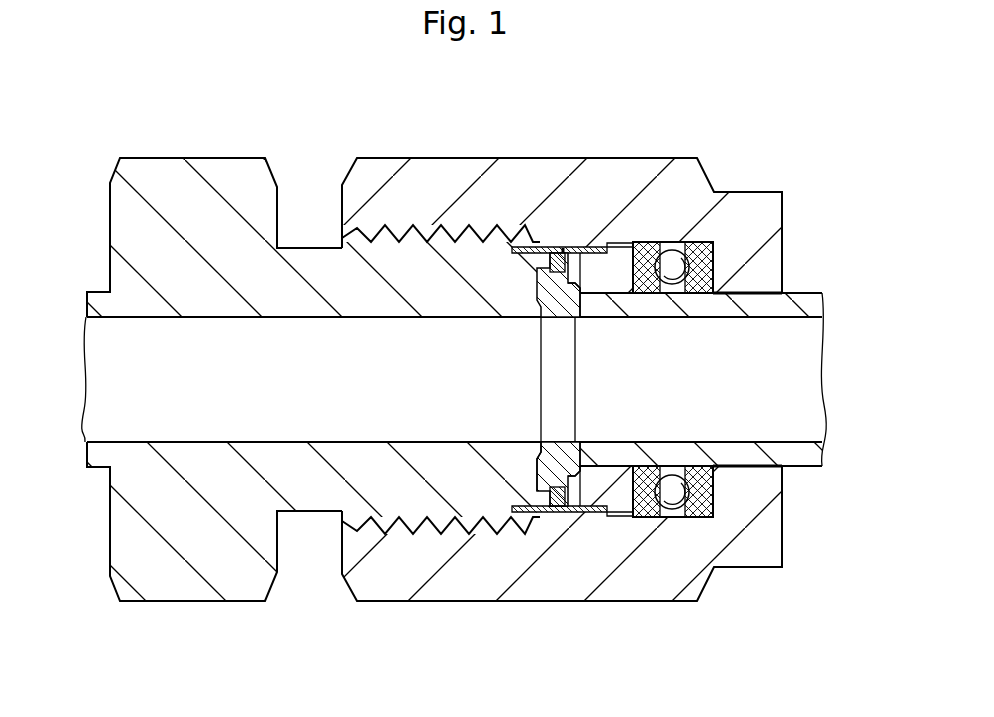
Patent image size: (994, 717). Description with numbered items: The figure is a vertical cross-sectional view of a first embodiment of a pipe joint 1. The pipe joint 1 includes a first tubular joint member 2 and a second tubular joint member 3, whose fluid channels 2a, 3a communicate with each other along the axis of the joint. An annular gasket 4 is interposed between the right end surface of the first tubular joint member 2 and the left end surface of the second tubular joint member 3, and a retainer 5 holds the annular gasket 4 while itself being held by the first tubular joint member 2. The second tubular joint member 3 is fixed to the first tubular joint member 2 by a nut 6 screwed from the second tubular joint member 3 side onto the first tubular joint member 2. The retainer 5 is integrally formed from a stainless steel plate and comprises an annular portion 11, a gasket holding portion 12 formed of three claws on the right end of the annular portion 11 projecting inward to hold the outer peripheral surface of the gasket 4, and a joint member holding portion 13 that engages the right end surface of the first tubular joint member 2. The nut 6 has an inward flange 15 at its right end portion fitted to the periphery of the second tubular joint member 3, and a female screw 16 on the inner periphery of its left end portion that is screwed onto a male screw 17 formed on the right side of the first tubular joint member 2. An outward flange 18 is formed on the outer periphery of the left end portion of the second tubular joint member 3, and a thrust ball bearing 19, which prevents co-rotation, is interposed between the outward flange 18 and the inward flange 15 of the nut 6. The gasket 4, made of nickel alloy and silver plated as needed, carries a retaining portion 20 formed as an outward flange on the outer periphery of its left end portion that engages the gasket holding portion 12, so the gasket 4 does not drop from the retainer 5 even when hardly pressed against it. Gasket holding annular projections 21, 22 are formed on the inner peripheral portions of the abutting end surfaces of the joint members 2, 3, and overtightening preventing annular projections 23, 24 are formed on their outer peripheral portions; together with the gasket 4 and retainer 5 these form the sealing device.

The pipe joint 1 is at (760, 149).
The first tubular joint member 2 is at (248, 157).
The fluid channel 2a is at (87, 330).
The second tubular joint member 3 is at (803, 294).
The fluid channel 3a is at (784, 318).
The annular gasket 4 is at (618, 290).
The retainer 5 is at (548, 268).
The nut 6 is at (420, 158).
The annular portion 11 is at (562, 500).
The gasket holding portion 12 is at (575, 500).
The joint member holding portion 13 is at (540, 495).
The flange 15 is at (767, 483).
The female screw 16 is at (403, 230).
The male screw 17 is at (357, 233).
The outward flange 18 is at (617, 482).
The thrust ball bearing 19 is at (705, 500).
The retaining portion 20 is at (547, 478).
The gasket holding annular projection 21 is at (535, 312).
The gasket holding annular projection 22 is at (633, 244).
The overtightening preventing annular projection 23 is at (563, 262).
The overtightening preventing annular projection 24 is at (584, 298).